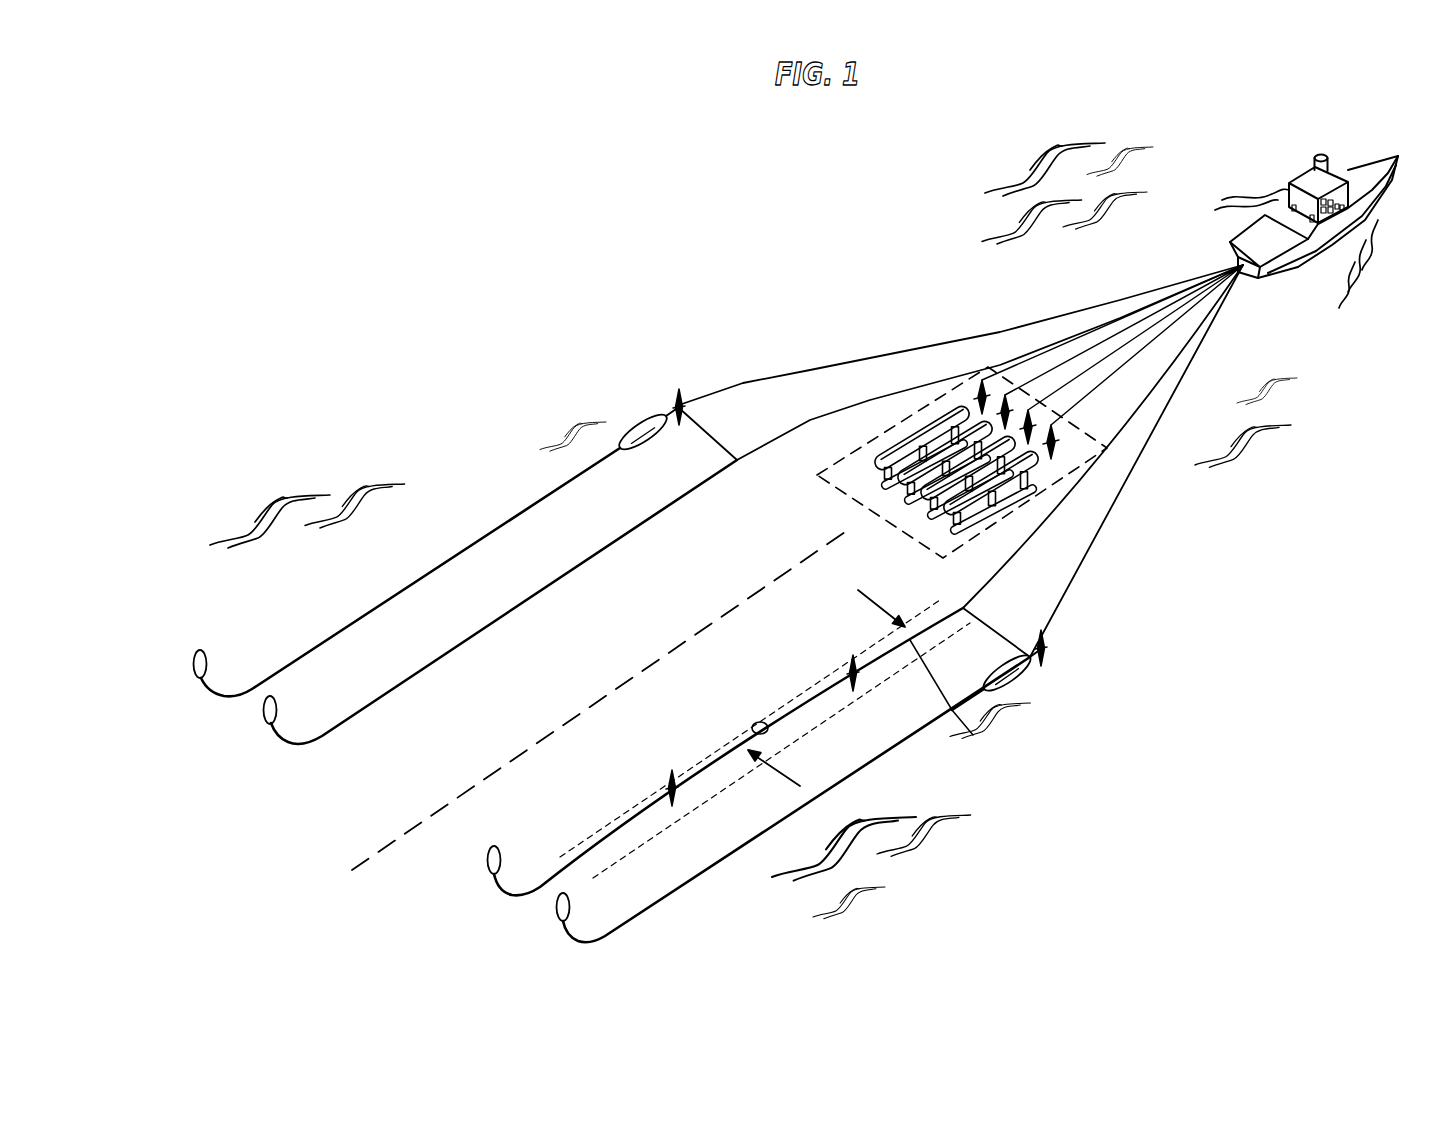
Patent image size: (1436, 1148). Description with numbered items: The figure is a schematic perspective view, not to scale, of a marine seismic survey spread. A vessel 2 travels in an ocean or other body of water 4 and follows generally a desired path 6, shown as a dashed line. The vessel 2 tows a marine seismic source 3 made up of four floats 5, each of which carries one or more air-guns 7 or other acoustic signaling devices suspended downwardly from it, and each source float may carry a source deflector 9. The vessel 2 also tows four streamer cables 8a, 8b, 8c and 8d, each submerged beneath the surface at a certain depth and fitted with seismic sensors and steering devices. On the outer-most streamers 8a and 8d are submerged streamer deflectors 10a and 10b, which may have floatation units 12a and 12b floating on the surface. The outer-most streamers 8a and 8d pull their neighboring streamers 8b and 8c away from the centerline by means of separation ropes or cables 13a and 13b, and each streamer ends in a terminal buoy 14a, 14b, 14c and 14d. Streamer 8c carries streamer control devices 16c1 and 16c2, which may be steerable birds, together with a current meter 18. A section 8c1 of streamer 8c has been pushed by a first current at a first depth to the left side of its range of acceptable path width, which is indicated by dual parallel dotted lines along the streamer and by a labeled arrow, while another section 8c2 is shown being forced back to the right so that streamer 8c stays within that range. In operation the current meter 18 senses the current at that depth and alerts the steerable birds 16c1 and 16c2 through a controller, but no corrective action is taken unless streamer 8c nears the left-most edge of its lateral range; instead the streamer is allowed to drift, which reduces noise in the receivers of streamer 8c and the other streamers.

The vessel 2 is at (1268, 168).
The marine seismic source 3 is at (843, 452).
The body of water 4 is at (1075, 194).
The float 5 is at (1015, 428).
The desired path 6 is at (380, 853).
The air-gun 7 is at (997, 507).
The streamer cable 8a is at (483, 536).
The streamer cable 8b is at (562, 583).
The streamer cable 8c is at (633, 824).
The streamer section 8c1 is at (805, 705).
The streamer section 8c2 is at (973, 735).
The streamer cable 8d is at (652, 912).
The source deflector 9 is at (980, 385).
The streamer deflector 10a is at (680, 390).
The streamer deflector 10b is at (1046, 660).
The floatation unit 12a is at (634, 424).
The floatation unit 12b is at (1003, 680).
The separation rope 13a is at (710, 436).
The separation rope 13b is at (997, 628).
The terminal buoy 14a is at (200, 650).
The terminal buoy 14b is at (270, 696).
The terminal buoy 14c is at (494, 846).
The terminal buoy 14d is at (563, 893).
The streamer control device 16c1 is at (672, 770).
The streamer control device 16c2 is at (885, 752).
The current meter 18 is at (758, 721).